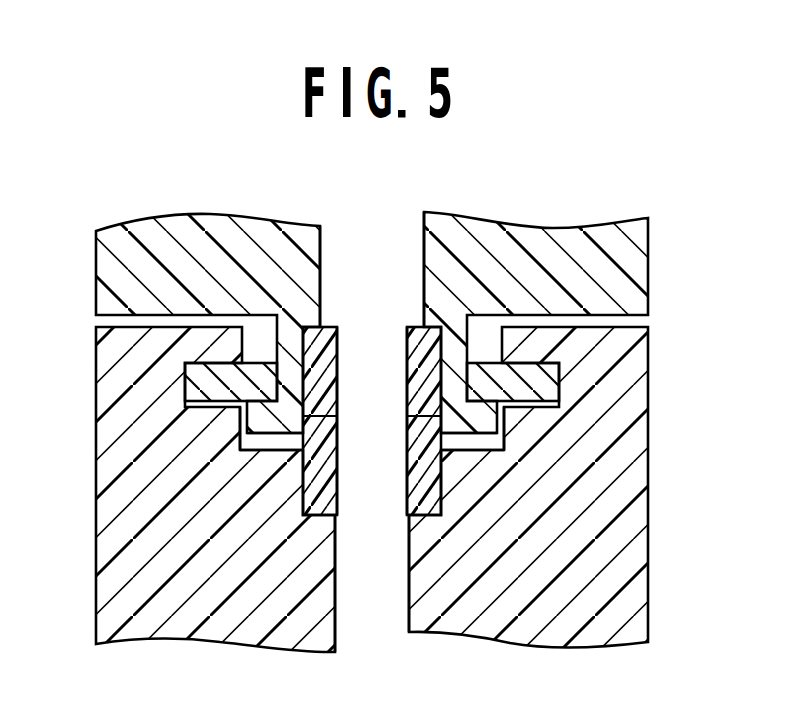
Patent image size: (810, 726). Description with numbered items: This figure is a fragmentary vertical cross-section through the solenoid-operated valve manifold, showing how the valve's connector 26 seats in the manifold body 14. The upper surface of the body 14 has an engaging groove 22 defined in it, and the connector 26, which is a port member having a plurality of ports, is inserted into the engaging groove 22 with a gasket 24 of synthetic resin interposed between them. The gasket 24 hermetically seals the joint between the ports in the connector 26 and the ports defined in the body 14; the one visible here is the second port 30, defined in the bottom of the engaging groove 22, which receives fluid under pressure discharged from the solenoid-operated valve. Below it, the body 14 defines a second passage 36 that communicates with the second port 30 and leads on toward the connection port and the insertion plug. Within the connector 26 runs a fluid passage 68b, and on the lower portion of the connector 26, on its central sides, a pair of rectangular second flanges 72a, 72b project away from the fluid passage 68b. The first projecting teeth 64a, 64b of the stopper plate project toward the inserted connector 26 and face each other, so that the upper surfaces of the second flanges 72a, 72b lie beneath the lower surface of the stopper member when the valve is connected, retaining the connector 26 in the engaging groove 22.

The body 14 is at (378, 430).
The engaging groove 22 is at (321, 422).
The gasket 24 is at (320, 490).
The connector 26 is at (526, 258).
The second port 30 is at (405, 482).
The second passage 36 is at (370, 613).
The first projecting tooth 64a is at (530, 392).
The first projecting tooth 64b is at (208, 383).
The fluid passage 68b is at (367, 262).
The second flange 72a is at (477, 428).
The second flange 72b is at (265, 422).